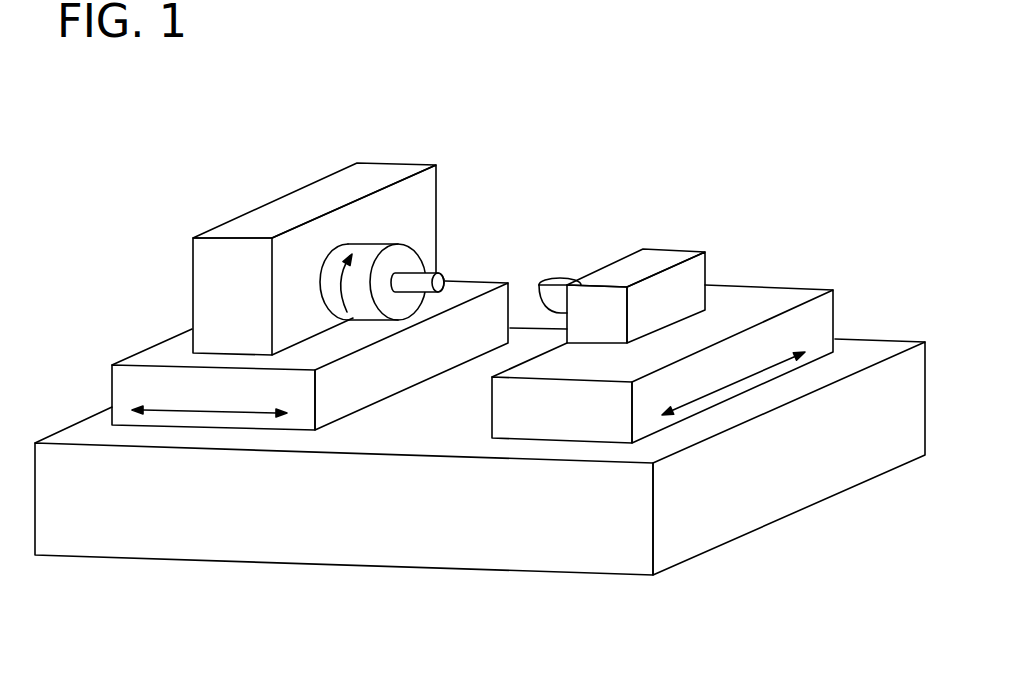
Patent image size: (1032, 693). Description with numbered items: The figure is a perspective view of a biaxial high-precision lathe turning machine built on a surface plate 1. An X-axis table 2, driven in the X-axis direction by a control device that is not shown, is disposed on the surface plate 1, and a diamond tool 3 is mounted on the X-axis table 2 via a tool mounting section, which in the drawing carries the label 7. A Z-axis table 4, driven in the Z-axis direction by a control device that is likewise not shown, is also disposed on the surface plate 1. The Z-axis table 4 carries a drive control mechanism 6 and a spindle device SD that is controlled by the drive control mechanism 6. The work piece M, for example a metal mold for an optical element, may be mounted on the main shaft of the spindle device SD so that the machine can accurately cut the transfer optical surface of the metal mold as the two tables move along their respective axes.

The surface plate 1 is at (813, 487).
The X-axis table 2 is at (822, 322).
The diamond tool 3 is at (555, 285).
The Z-axis table 4 is at (120, 382).
The drive control mechanism 6 is at (400, 163).
The tool holder 7 is at (697, 273).
The spindle device SD is at (373, 254).
The work piece M is at (424, 268).